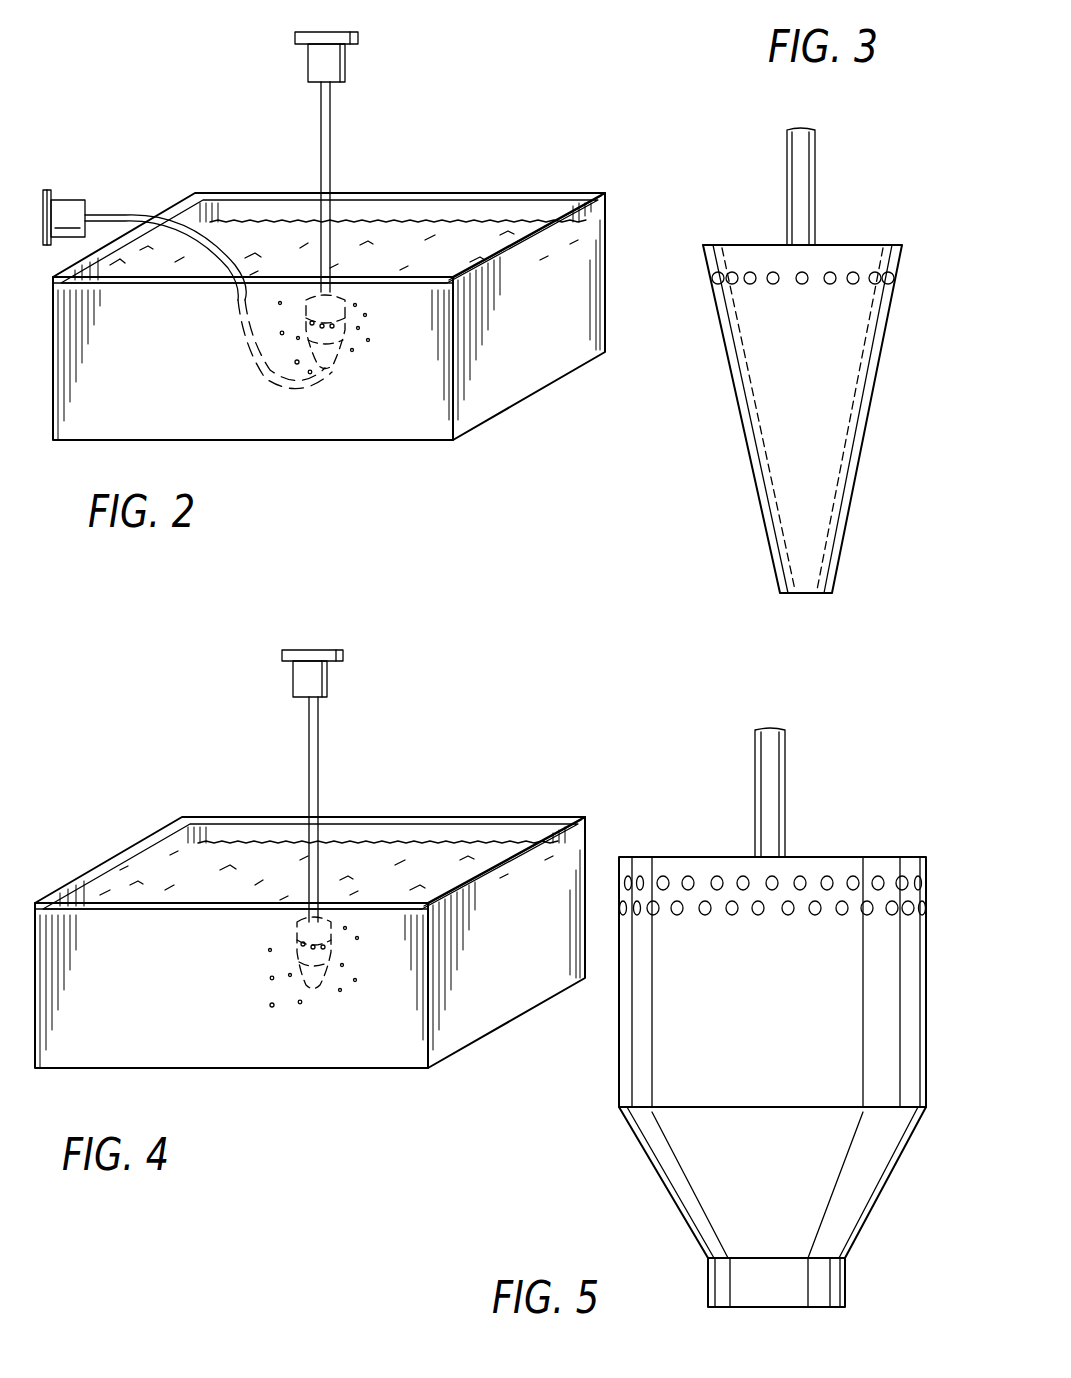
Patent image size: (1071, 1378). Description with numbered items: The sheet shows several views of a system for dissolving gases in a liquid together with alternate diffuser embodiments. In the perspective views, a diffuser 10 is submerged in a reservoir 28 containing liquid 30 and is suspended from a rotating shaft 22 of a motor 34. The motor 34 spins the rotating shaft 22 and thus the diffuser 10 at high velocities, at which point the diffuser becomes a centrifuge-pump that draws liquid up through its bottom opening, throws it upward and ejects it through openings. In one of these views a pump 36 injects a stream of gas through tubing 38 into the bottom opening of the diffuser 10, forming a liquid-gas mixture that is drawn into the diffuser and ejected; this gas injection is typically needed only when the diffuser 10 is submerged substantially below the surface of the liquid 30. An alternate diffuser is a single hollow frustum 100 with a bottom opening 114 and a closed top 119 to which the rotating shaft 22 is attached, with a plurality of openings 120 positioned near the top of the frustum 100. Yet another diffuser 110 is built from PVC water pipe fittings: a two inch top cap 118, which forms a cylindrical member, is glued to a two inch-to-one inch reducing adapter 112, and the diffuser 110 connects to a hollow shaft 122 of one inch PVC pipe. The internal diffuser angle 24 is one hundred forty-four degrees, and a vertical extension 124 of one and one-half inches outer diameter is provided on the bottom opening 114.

In FIG. 2, the diffuser 10 is at (308, 298).
In FIG. 4, the diffuser 10 is at (300, 918).
In FIG. 2, the rotating shaft 22 is at (332, 130).
In FIG. 3, the rotating shaft 22 is at (815, 168).
In FIG. 4, the rotating shaft 22 is at (320, 752).
In FIG. 5, the angle of cone 24 is at (670, 1178).
In FIG. 2, the reservoir 28 is at (527, 193).
In FIG. 4, the reservoir 28 is at (527, 817).
In FIG. 2, the liquid 30 is at (432, 215).
In FIG. 4, the liquid 30 is at (430, 868).
In FIG. 2, the motor 34 is at (345, 62).
In FIG. 4, the motor 34 is at (330, 683).
In FIG. 2, the pump 36 is at (70, 200).
In FIG. 2, the tubing 38 is at (135, 213).
In FIG. 3, the hollow frustum 100 is at (878, 242).
In FIG. 5, the diffuser 110 is at (877, 848).
In FIG. 5, the reducing adapter 112 is at (683, 1215).
In FIG. 3, the bottom opening 114 is at (805, 595).
In FIG. 5, the bottom opening 114 is at (772, 1257).
In FIG. 5, the top cap 118 is at (619, 1088).
In FIG. 3, the closed top 119 is at (747, 246).
In FIG. 3, the plurality of openings 120 is at (830, 288).
In FIG. 5, the hollow shaft 122 is at (787, 780).
In FIG. 5, the vertical extension 124 is at (847, 1293).